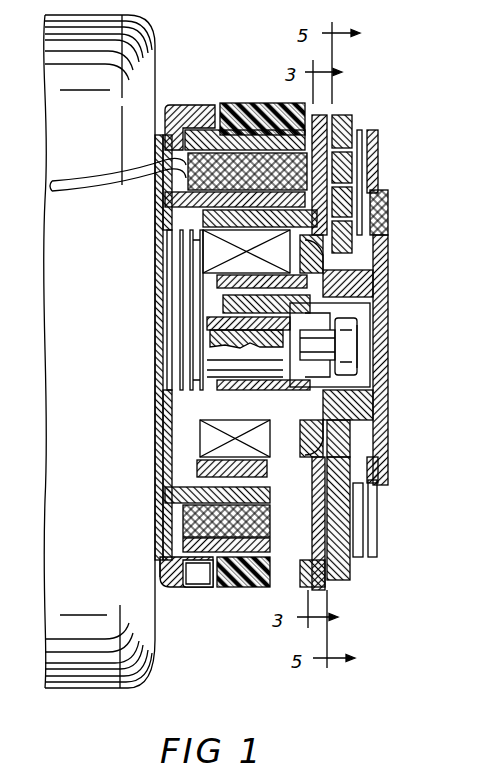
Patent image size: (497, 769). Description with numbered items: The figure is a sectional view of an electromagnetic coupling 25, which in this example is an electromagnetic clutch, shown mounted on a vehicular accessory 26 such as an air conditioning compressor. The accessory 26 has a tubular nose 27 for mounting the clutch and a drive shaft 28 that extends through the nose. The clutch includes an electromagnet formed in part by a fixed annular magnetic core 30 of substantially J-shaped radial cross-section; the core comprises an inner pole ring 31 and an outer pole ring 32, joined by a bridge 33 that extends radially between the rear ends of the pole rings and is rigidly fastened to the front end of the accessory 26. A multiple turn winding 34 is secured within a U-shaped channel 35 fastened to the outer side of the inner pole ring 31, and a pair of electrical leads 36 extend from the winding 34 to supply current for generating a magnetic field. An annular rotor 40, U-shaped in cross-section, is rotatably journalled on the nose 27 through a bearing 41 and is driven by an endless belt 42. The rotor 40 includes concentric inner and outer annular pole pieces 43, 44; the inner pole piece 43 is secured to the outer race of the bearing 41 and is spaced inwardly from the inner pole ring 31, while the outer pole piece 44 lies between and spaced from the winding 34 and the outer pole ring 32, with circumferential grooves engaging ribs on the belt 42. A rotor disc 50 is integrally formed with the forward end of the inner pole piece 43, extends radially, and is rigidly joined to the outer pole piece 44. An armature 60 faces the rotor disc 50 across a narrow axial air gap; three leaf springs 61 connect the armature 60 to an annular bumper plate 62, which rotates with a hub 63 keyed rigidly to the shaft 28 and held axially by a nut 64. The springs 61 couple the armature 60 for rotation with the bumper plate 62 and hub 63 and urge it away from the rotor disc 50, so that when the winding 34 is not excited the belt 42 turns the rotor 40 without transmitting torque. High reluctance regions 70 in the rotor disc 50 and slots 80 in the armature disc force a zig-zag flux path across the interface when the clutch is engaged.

The electromagnetic coupling 25 is at (232, 101).
The vehicular accessory 26 is at (150, 36).
The tubular nose 27 is at (217, 280).
The drive shaft 28 is at (220, 343).
The magnetic core 30 is at (180, 591).
The inner pole ring 31 is at (178, 478).
The outer pole ring 32 is at (180, 586).
The bridge 33 is at (180, 528).
The winding 34 is at (180, 548).
The U-shaped channel 35 is at (195, 500).
The electrical leads 36 is at (90, 176).
The rotor 40 is at (190, 445).
The bearing 41 is at (258, 332).
The endless belt 42 is at (236, 587).
The inner pole piece 43 is at (250, 462).
The outer pole piece 44 is at (185, 566).
The rotor disc 50 is at (326, 586).
The armature 60 is at (345, 562).
The leaf springs 61 is at (368, 187).
The bumper plate 62 is at (388, 201).
The hub 63 is at (373, 266).
The nut 64 is at (336, 320).
The high reluctance regions 70 is at (355, 490).
The armature disc slots 80 is at (340, 512).